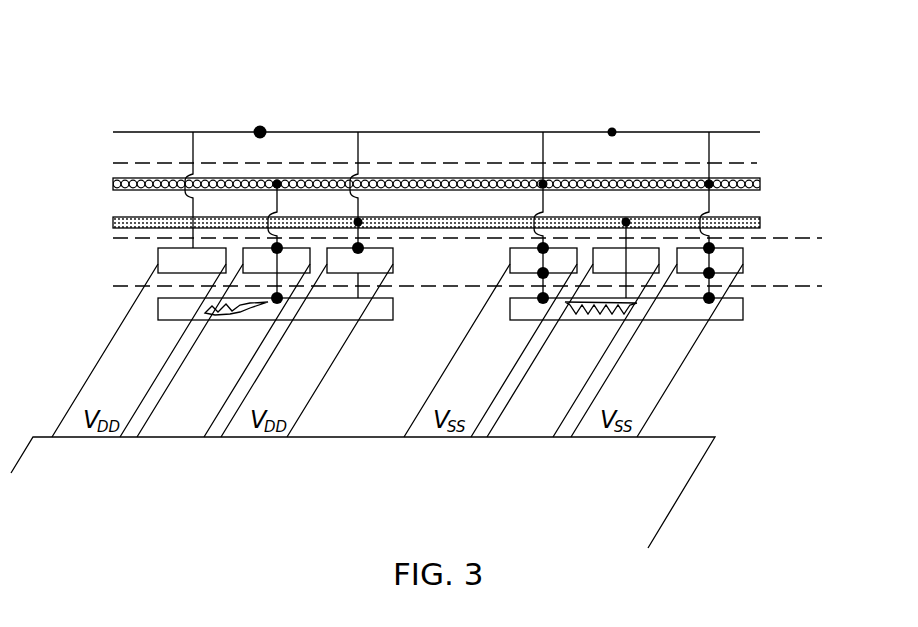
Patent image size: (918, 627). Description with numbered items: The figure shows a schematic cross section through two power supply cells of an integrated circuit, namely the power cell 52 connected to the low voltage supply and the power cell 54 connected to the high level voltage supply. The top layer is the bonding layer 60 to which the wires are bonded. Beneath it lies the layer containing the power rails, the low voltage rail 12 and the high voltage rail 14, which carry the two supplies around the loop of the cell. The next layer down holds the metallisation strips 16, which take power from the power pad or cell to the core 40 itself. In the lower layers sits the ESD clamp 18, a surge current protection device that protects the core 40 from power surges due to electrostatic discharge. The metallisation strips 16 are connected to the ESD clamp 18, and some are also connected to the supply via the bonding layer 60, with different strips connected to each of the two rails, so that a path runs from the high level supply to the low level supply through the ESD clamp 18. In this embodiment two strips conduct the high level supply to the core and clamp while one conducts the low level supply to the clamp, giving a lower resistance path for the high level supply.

The bonding layer 60 is at (772, 150).
The VSS rail 12 is at (830, 185).
The VDD rail 14 is at (830, 225).
The metallisation strips 16 is at (765, 267).
The ESD clamp 18 is at (765, 318).
The core 40 is at (673, 472).
The power cell 52 is at (656, 68).
The power cell 54 is at (306, 57).